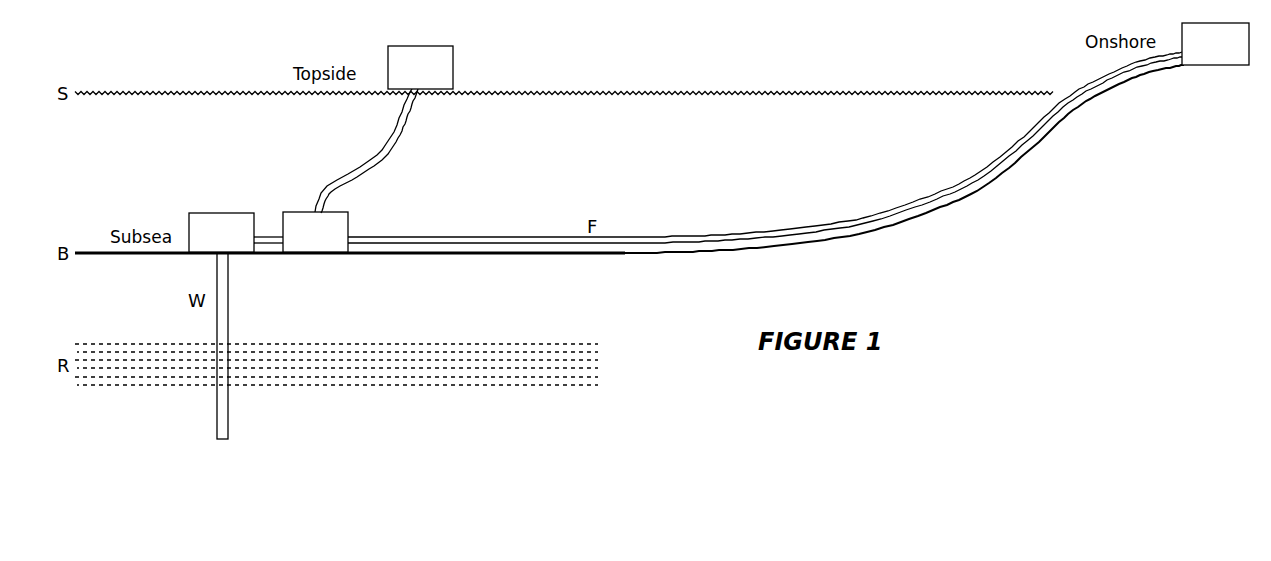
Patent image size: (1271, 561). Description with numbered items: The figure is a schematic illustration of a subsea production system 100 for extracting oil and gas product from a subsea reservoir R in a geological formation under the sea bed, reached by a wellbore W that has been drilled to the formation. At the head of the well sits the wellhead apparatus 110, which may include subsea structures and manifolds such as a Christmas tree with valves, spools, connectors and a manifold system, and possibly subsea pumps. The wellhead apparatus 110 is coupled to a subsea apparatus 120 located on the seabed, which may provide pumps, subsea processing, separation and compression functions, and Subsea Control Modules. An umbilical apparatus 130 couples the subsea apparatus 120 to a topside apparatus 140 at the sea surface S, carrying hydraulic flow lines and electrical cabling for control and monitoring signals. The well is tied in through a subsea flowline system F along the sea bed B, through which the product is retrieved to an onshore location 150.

The subsea production system 100 is at (186, 78).
The wellhead apparatus 110 is at (221, 232).
The subsea apparatus 120 is at (315, 232).
The umbilical apparatus 130 is at (386, 144).
The topside apparatus 140 is at (420, 67).
The onshore location 150 is at (1215, 44).